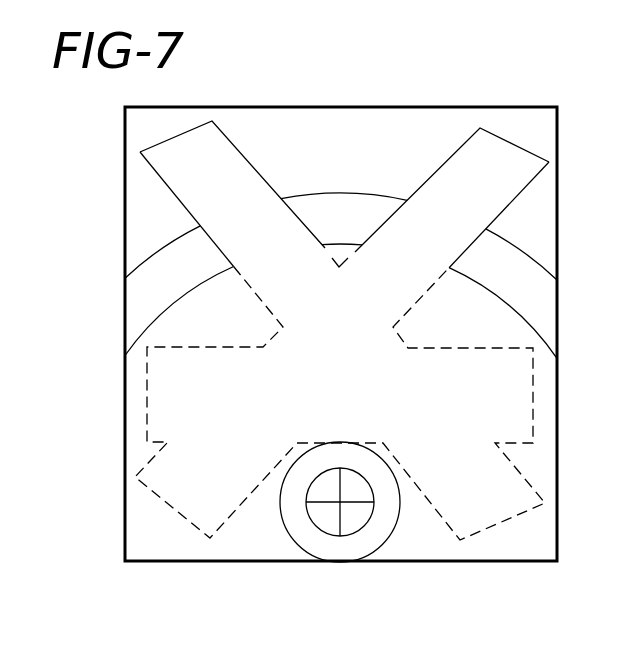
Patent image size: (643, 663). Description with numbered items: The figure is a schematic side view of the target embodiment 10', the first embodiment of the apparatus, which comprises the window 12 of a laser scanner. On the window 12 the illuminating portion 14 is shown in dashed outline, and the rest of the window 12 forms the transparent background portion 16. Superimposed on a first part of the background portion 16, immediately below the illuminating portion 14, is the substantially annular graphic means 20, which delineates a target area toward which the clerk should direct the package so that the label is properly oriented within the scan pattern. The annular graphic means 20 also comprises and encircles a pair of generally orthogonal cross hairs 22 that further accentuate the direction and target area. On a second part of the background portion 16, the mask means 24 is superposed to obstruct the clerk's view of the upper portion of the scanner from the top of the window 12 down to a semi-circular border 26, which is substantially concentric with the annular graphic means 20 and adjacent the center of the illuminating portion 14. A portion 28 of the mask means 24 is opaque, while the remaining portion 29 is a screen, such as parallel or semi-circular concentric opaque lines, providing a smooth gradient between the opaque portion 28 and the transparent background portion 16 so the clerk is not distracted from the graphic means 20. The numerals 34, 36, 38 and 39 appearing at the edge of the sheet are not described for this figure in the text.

The target embodiment 10' is at (431, 57).
The window 12 is at (474, 107).
The illuminating portion 14 is at (221, 190).
The background portion 16 is at (354, 161).
The graphic means 20 is at (380, 548).
The cross hairs 22 is at (325, 505).
The mask means 24 is at (150, 183).
The semi-circular border 26 is at (153, 315).
The opaque portion 28 is at (137, 211).
The screen portion 29 is at (148, 277).
The partial numeral 34 is at (635, 224).
The partial numeral 36 is at (642, 390).
The partial numeral 38 is at (630, 290).
The partial numeral 39 is at (635, 360).